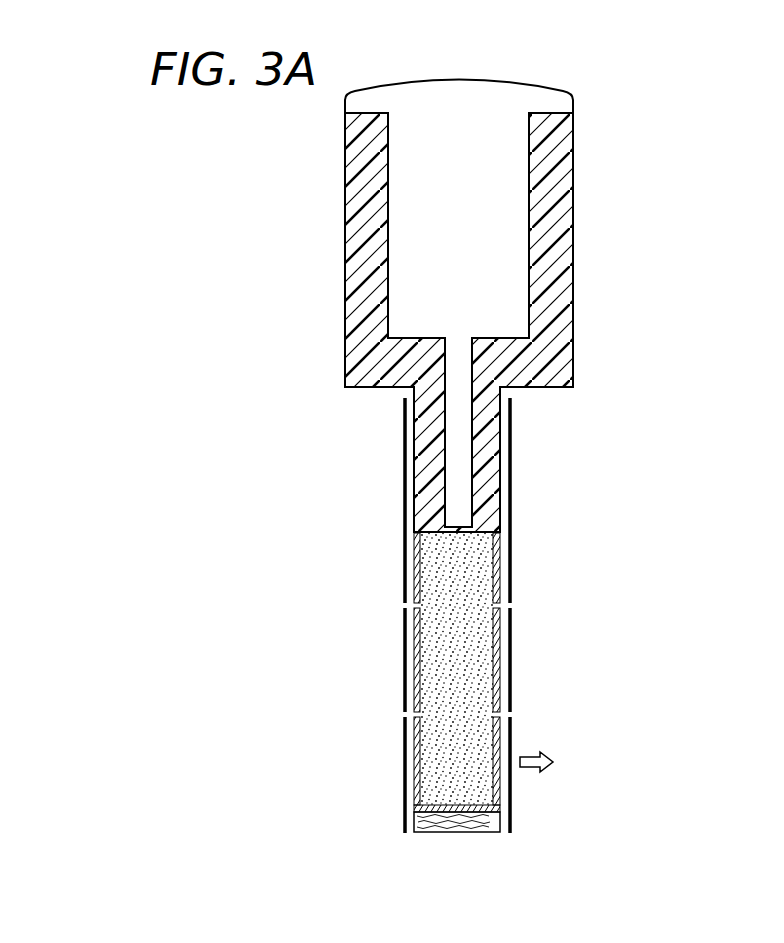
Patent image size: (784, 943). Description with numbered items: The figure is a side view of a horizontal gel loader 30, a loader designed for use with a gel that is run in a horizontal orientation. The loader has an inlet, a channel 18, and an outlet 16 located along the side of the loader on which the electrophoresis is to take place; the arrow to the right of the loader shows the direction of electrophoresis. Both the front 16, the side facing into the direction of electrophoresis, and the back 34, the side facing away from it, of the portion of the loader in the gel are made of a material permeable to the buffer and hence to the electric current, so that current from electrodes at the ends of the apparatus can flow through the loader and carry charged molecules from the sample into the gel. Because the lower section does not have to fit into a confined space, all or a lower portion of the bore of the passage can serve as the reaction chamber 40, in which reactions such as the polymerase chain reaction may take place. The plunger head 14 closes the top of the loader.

The horizontal gel loader 30 is at (613, 79).
The plunger head 14 is at (455, 78).
The front outlet 16 is at (519, 659).
The back side 34 is at (402, 657).
The reaction chamber 40 is at (497, 703).
The channel 18 is at (477, 573).